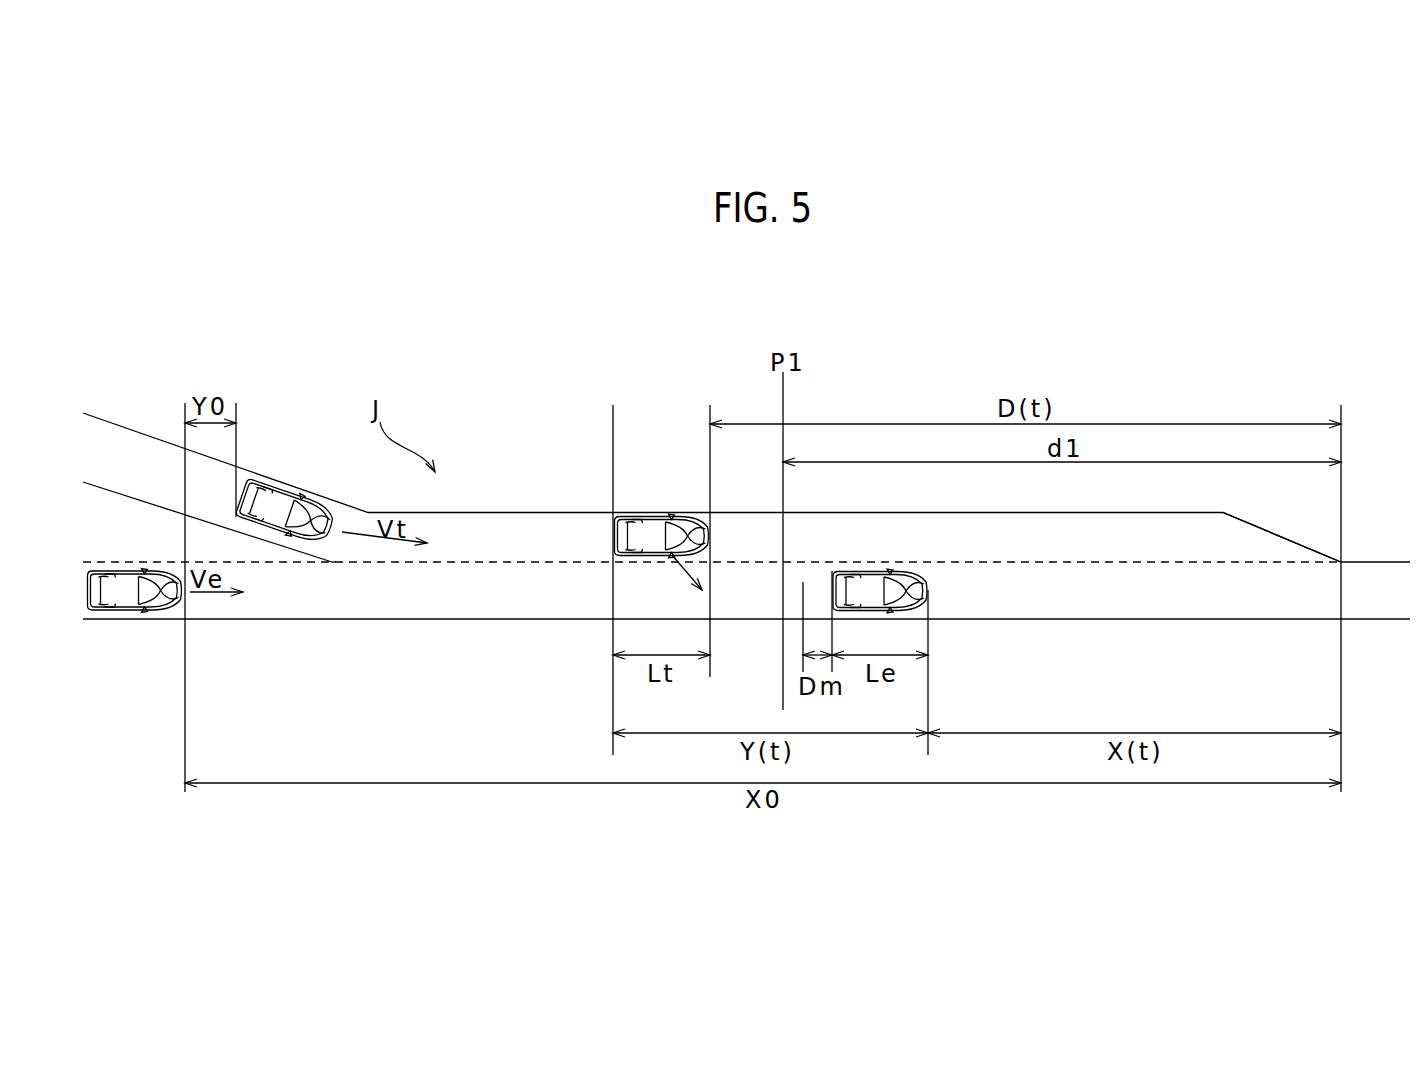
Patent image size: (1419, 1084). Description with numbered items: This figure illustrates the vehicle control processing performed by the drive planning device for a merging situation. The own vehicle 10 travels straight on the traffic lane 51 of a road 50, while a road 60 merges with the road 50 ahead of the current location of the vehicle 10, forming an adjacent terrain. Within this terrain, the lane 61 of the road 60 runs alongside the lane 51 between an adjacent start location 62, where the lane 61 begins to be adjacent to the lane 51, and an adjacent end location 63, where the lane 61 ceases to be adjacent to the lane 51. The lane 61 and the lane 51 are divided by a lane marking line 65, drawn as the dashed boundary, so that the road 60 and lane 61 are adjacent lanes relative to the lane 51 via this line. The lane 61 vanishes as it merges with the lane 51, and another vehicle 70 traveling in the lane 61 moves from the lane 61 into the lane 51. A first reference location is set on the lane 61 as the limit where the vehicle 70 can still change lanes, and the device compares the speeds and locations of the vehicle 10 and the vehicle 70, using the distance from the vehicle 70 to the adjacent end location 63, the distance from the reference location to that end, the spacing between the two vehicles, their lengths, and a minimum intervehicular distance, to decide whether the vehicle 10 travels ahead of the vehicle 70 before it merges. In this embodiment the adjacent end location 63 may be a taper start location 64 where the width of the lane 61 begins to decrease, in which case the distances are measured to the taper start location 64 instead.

The vehicle 10 is at (122, 590).
The vehicle 70 is at (277, 512).
The road 50 is at (365, 620).
The lane 51 is at (508, 610).
The road 60 is at (525, 512).
The lane 61 is at (508, 553).
The adjacent start location 62 is at (333, 563).
The adjacent end location 63 is at (1345, 560).
The taper start location 64 is at (1225, 512).
The lane marking line 65 is at (555, 565).